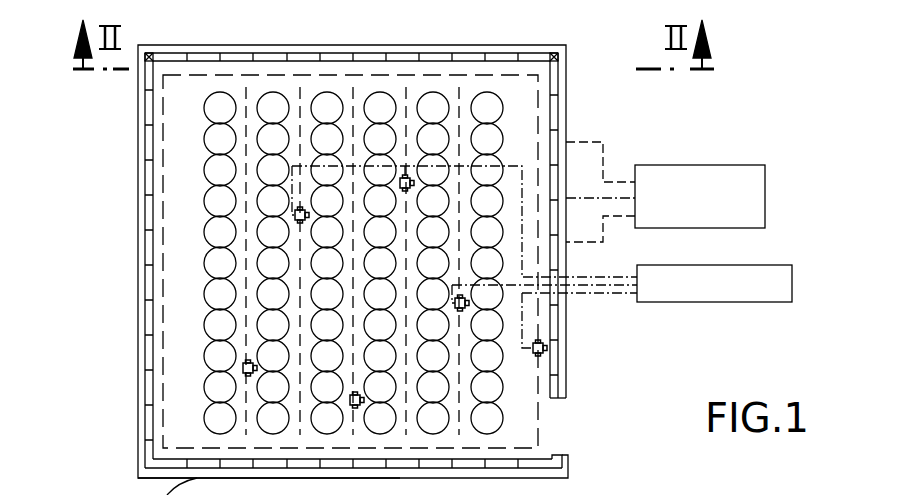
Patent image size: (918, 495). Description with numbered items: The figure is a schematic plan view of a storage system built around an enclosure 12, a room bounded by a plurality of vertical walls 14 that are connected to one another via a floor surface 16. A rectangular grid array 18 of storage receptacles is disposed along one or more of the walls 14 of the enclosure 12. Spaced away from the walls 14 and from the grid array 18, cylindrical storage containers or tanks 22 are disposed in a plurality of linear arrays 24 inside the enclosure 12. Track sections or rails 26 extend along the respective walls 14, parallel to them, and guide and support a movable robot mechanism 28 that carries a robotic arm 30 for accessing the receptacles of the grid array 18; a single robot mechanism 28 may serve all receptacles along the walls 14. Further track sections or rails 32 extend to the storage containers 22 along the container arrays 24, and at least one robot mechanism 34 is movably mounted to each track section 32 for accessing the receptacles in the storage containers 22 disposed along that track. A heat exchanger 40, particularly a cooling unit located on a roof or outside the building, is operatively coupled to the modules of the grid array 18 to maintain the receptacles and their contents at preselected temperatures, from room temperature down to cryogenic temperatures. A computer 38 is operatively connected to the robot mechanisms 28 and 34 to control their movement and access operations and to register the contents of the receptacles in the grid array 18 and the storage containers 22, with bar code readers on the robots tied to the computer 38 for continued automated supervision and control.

The enclosure 12 is at (134, 416).
The vertical walls 14 is at (137, 439).
The floor surface 16 is at (185, 218).
The rectangular grid array 18 is at (344, 46).
The cylindrical storage containers 22 is at (273, 198).
The linear arrays 24 is at (434, 84).
The track sections 26 is at (538, 110).
The robot mechanism 28 is at (552, 360).
The robotic arm 30 is at (548, 346).
The further track sections 32 is at (243, 90).
The robot mechanism 34 is at (244, 365).
The computer 38 is at (752, 302).
The heat exchanger 40 is at (650, 165).